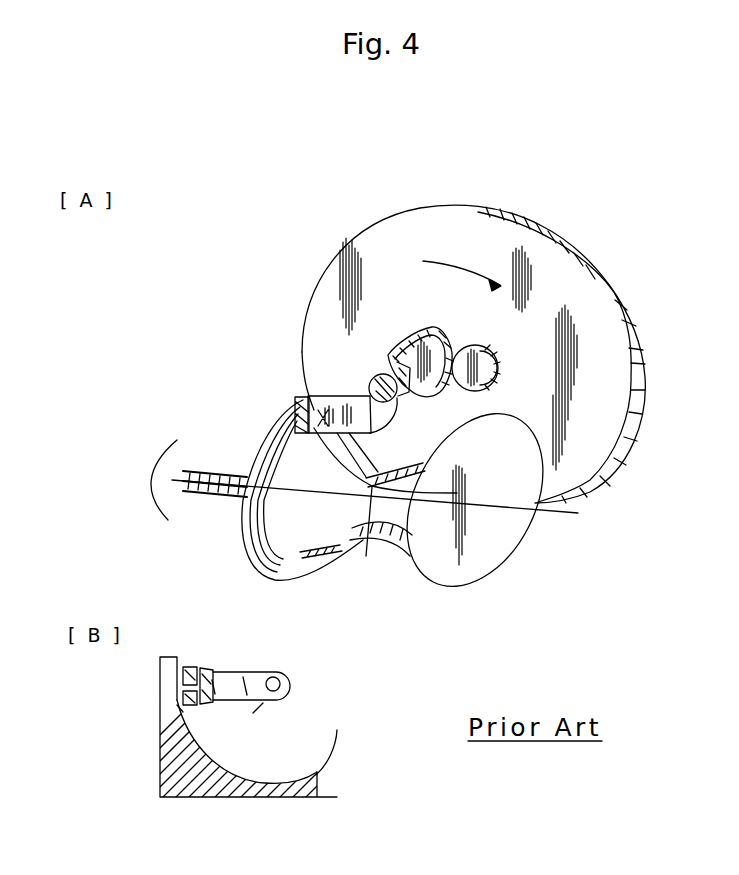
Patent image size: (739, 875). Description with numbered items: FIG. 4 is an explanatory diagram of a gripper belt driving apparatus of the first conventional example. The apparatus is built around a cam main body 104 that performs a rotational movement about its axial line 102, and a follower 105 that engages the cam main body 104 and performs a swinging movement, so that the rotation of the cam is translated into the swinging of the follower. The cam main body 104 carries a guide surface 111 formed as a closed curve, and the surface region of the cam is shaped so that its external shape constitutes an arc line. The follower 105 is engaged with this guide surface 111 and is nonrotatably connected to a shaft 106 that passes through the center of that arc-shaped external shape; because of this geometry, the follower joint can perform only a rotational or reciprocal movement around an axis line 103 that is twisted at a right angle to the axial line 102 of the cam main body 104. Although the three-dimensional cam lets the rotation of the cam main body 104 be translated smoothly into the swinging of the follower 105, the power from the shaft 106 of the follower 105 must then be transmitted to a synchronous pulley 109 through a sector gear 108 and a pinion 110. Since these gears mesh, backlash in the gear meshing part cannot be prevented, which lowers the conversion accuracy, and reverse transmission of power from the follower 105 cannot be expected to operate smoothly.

The axial line 102 is at (563, 514).
The axis line 103 is at (358, 391).
The cam main body 104 is at (260, 553).
The follower 105 is at (307, 382).
The shaft 106 is at (381, 381).
The sector gear 108 is at (428, 342).
The synchronous pulley 109 is at (573, 293).
The pinion 110 is at (481, 362).
The guide surface 111 is at (263, 517).